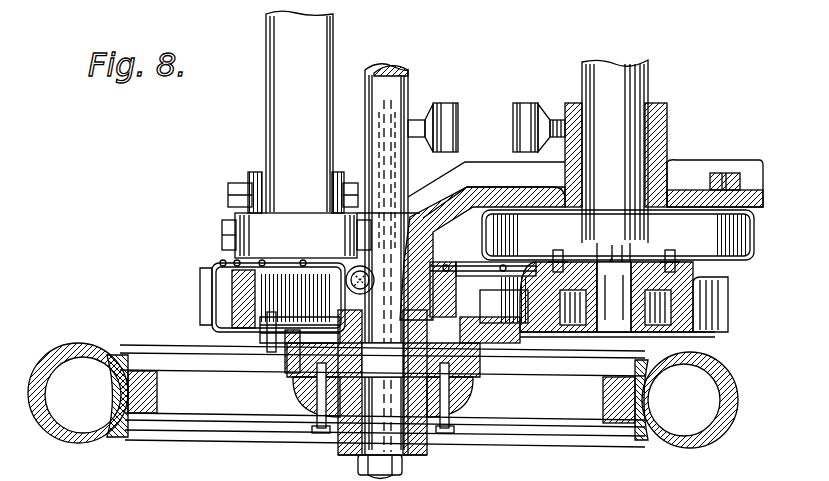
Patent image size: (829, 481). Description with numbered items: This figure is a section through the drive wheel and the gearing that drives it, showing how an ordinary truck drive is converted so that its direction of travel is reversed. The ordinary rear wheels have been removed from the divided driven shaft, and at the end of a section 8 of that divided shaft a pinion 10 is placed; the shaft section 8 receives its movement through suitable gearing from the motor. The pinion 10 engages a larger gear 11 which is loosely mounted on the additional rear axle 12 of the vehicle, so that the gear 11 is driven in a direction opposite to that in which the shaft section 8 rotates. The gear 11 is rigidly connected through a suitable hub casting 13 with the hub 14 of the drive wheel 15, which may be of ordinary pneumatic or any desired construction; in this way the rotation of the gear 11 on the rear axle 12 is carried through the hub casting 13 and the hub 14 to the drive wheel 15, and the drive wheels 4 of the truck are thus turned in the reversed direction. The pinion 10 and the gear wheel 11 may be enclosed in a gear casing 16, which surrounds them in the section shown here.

The drive wheel 4 is at (46, 345).
The section of the divided shaft 8 is at (650, 72).
The pinion 10 is at (682, 308).
The gear 11 is at (212, 279).
The rear axle 12 is at (411, 80).
The hub casting 13 is at (300, 363).
The hub 14 is at (297, 410).
The drive wheel 15 is at (148, 371).
The gear casing 16 is at (232, 300).